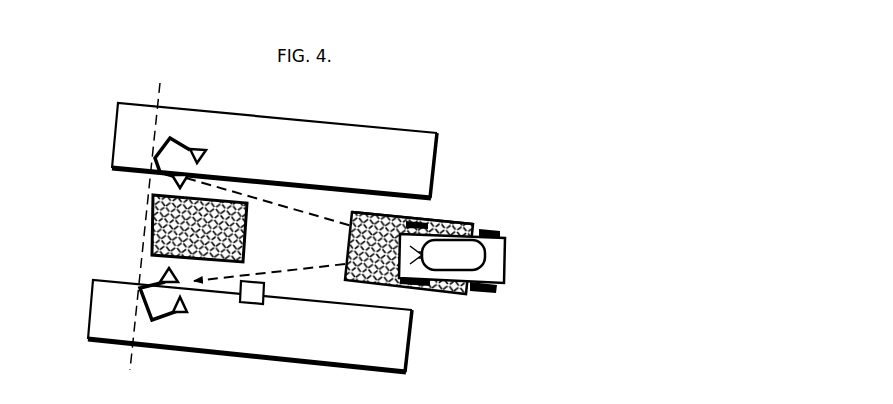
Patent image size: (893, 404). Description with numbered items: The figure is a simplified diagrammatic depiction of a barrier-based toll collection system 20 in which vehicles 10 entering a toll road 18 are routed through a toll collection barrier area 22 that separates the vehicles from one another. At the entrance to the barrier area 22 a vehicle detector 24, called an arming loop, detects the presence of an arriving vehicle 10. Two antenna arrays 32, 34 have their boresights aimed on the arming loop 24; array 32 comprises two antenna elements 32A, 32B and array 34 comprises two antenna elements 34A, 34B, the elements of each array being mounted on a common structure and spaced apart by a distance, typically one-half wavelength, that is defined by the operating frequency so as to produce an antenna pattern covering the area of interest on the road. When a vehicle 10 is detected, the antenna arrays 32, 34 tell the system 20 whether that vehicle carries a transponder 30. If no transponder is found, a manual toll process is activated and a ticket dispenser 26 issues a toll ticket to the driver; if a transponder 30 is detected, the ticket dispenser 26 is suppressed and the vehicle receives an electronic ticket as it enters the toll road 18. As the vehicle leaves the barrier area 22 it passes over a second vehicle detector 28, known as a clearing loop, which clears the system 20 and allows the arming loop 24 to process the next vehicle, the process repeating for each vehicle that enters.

The vehicle 10 is at (494, 255).
The toll road 18 is at (23, 197).
The barrier-based toll collection system 20 is at (325, 215).
The toll collection barrier area 22 is at (362, 200).
The vehicle detector (arming loop) 24 is at (480, 217).
The ticket dispenser 26 is at (258, 305).
The second vehicle detector (clearing loop) 28 is at (152, 203).
The transponder 30 is at (422, 248).
The antenna array 32 is at (185, 130).
The antenna element 32A is at (198, 150).
The antenna element 32B is at (172, 182).
The antenna array 34 is at (220, 321).
The antenna element 34A is at (165, 277).
The antenna element 34B is at (181, 314).